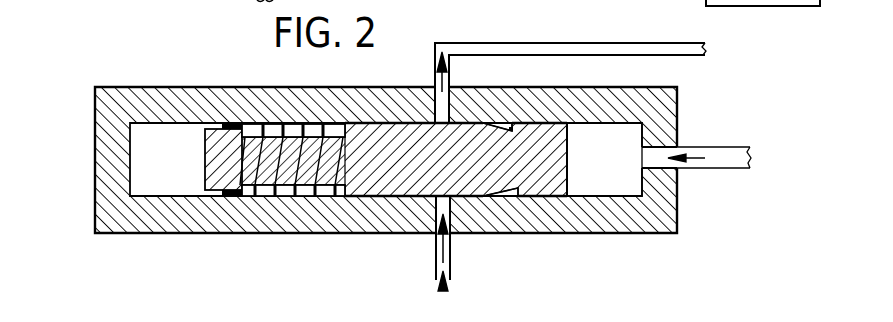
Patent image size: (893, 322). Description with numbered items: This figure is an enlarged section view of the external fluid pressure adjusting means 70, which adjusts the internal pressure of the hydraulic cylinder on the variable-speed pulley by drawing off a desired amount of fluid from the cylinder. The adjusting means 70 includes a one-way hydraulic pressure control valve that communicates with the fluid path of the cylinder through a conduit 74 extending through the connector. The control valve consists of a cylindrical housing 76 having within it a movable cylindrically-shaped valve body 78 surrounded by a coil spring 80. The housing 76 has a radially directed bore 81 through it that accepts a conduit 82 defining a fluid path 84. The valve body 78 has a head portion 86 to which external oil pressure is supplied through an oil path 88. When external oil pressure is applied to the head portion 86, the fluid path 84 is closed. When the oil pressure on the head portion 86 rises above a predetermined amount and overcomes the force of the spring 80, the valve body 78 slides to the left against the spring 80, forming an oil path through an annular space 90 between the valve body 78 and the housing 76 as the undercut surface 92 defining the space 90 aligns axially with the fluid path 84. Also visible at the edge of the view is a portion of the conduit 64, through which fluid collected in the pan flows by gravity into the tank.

The external fluid pressure adjusting means 70 is at (128, 75).
The cylindrical housing 76 is at (193, 95).
The valve body 78 is at (383, 176).
The coil spring 80 is at (247, 193).
The conduit 82 is at (452, 106).
The fluid path 84 is at (445, 291).
The conduit 74 is at (452, 247).
The radially directed bore 81 is at (433, 212).
The head portion 86 is at (568, 152).
The oil path 88 is at (735, 168).
The annular space 90 is at (505, 195).
The undercut surface 92 is at (508, 128).
The conduit 64 is at (641, 0).